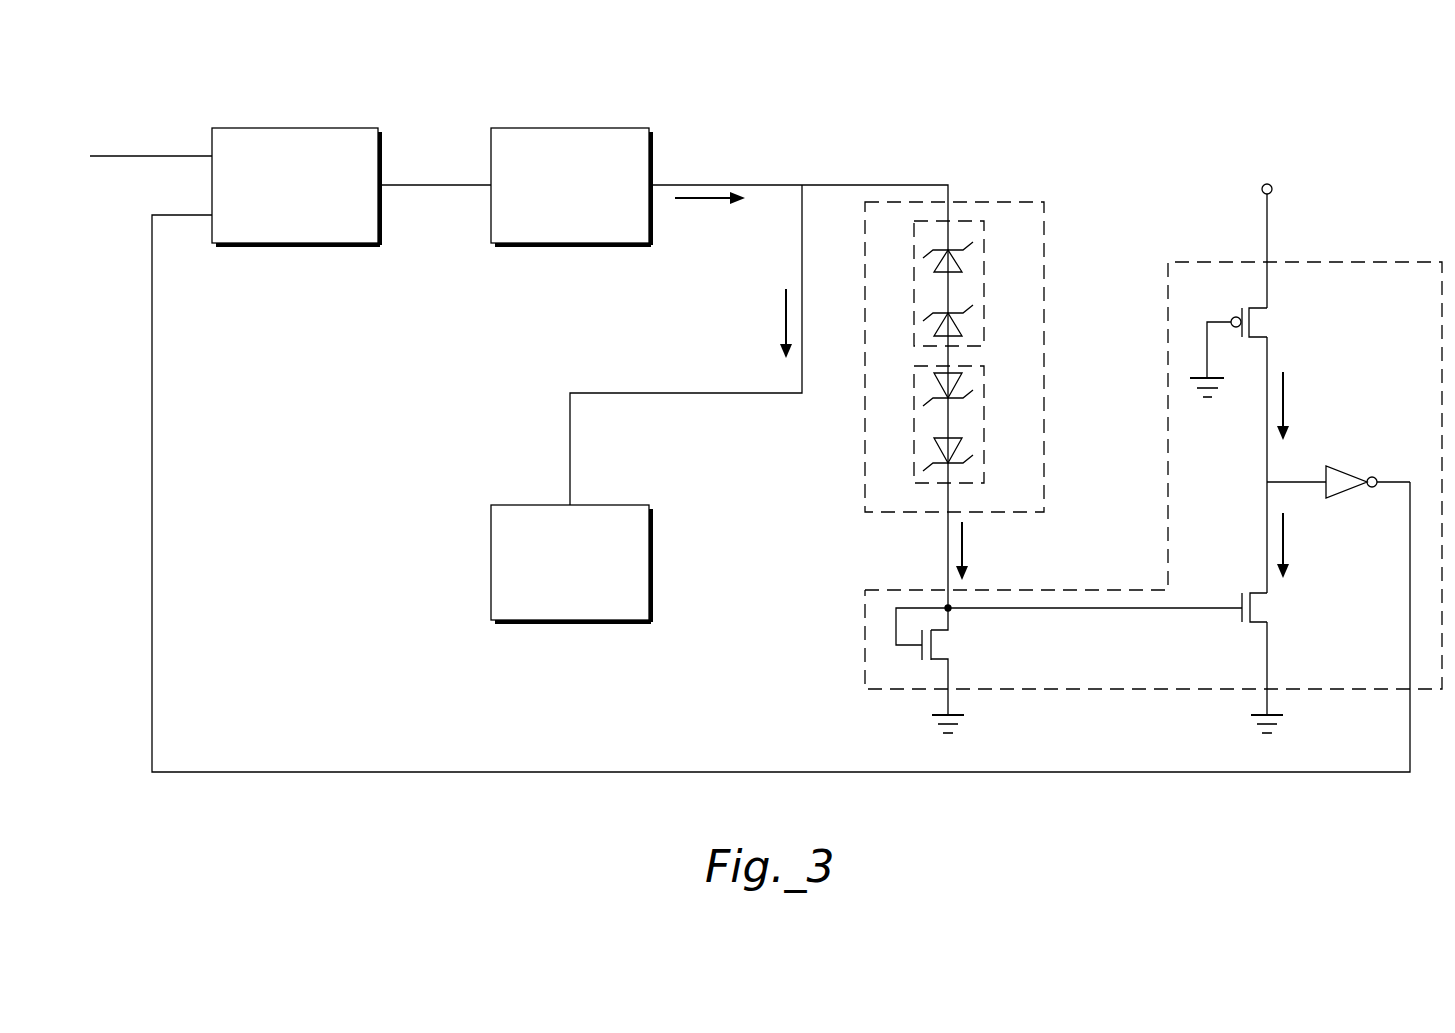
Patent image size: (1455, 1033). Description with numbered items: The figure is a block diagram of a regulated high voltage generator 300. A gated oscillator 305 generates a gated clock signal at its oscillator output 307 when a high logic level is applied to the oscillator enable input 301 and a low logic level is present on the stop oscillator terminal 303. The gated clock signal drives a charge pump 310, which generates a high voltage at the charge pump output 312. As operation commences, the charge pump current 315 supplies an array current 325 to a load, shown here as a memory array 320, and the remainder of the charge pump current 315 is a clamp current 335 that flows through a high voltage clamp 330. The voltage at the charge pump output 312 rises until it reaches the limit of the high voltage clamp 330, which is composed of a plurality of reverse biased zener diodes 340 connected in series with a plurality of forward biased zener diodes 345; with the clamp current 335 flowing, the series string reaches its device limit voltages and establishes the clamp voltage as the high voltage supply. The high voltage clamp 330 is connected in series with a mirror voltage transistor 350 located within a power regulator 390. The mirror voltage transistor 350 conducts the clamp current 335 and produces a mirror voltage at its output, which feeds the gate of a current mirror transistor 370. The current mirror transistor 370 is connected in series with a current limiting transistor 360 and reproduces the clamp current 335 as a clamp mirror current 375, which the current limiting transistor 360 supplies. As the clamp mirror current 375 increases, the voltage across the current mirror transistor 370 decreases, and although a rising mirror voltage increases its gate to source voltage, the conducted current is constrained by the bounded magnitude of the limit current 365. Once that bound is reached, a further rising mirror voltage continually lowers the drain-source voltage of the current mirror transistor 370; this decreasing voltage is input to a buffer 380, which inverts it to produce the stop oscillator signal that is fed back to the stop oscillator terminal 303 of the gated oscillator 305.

The regulated high voltage generator 300 is at (968, 78).
The oscillator enable input 301 is at (143, 156).
The stop oscillator terminal 303 is at (183, 215).
The gated oscillator 305 is at (297, 128).
The oscillator output 307 is at (425, 185).
The charge pump 310 is at (570, 128).
The charge pump output 312 is at (714, 185).
The charge pump current 315 is at (712, 202).
The memory array 320 is at (649, 530).
The array current 325 is at (785, 318).
The high voltage clamp 330 is at (1044, 290).
The clamp current 335 is at (965, 540).
The reverse biased zener diodes 340 is at (984, 258).
The forward biased zener diodes 345 is at (984, 402).
The mirror voltage transistor 350 is at (948, 648).
The current limiting transistor 360 is at (1268, 326).
The limit current 365 is at (1285, 397).
The current mirror transistor 370 is at (1268, 610).
The clamp mirror current 375 is at (1285, 539).
The buffer 380 is at (1350, 473).
The power regulator 390 is at (1357, 262).